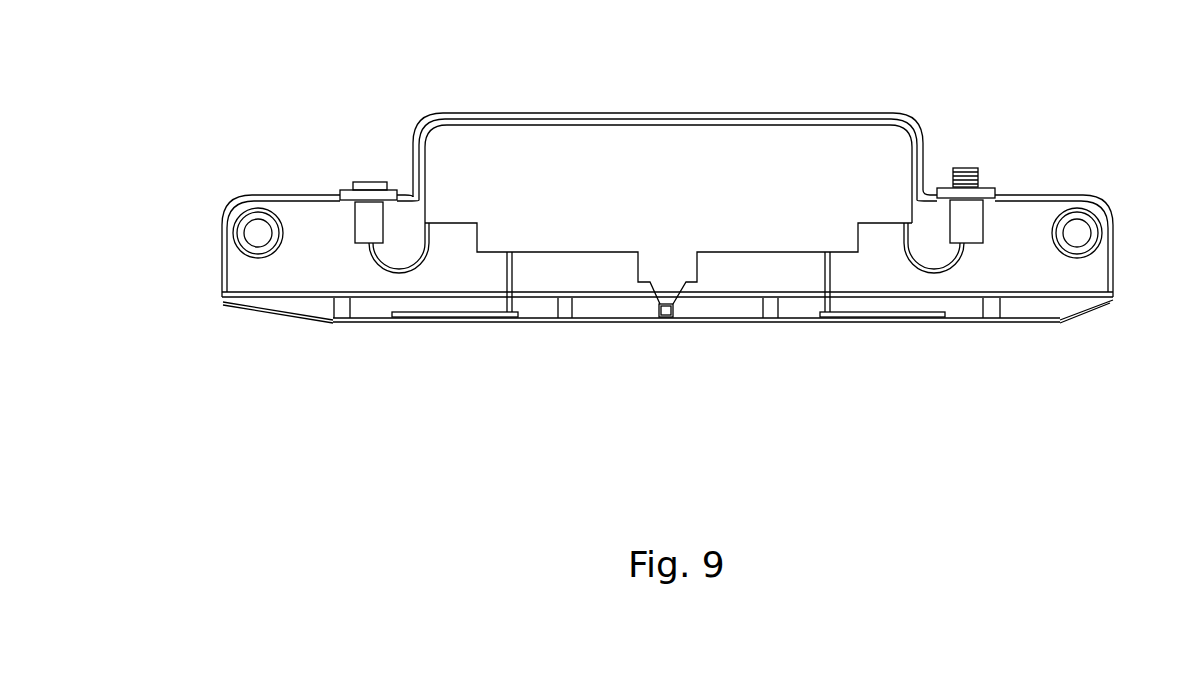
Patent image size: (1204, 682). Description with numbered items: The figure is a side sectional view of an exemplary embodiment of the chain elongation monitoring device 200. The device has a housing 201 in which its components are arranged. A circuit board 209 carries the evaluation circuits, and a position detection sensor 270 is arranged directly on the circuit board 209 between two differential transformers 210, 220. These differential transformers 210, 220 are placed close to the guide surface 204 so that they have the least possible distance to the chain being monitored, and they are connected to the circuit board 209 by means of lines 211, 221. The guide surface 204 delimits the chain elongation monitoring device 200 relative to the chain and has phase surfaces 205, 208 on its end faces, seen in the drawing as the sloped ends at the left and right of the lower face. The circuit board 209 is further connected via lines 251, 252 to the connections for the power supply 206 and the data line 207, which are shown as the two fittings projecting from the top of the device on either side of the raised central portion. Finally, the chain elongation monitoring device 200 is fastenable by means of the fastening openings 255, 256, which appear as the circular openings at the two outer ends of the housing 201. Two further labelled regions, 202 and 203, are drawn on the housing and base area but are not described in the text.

The chain elongation monitoring device 200 is at (691, 26).
The housing 201 is at (476, 107).
The housing 202 is at (667, 254).
The base portion 203 is at (594, 311).
The guide surface 204 is at (717, 327).
The phase surface 205 is at (267, 312).
The power supply connection 206 is at (963, 170).
The data line connection 207 is at (365, 182).
The phase surface 208 is at (1067, 315).
The circuit board 209 is at (668, 236).
The differential transformer 210 is at (437, 318).
The line 211 is at (512, 302).
The differential transformer 220 is at (857, 318).
The line 221 is at (823, 302).
The line 251 is at (940, 273).
The line 252 is at (380, 267).
The fastening opening 255 is at (248, 236).
The fastening opening 256 is at (1097, 240).
The position detection sensor 270 is at (668, 318).